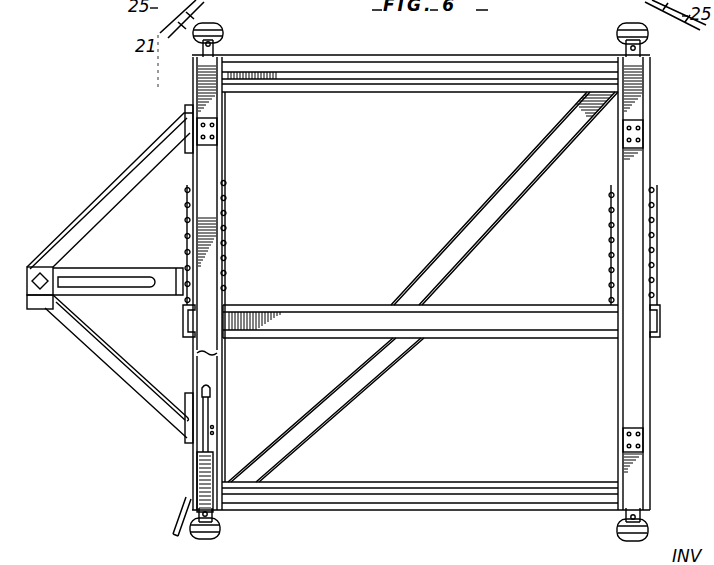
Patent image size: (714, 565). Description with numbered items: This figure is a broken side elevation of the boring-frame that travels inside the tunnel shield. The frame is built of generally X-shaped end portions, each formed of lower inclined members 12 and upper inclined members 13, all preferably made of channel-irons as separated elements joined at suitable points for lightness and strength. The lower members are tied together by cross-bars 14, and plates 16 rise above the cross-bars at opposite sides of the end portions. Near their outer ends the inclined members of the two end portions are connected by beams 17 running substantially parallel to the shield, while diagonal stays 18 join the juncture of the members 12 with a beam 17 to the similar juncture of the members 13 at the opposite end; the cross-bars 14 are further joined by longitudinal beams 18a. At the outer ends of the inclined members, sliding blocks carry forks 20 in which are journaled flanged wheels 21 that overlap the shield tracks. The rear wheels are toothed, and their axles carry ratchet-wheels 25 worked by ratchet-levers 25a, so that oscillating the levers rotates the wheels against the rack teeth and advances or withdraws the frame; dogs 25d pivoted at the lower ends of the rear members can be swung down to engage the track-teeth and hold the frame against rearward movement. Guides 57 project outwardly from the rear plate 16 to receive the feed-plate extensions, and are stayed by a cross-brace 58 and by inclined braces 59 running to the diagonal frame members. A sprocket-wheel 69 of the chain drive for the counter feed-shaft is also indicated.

The lower inclined member 12 is at (205, 373).
The upper inclined member 13 is at (212, 163).
The cross-bar 14 is at (188, 322).
The plate 16 is at (195, 212).
The connecting-beam 17 is at (437, 80).
The diagonal beam or stay 18 is at (438, 275).
The longitudinal beam 18a is at (525, 323).
The fork 20 is at (218, 52).
The wheel 21 is at (625, 35).
The ratchet-wheel 25 is at (218, 520).
The ratchet-lever 25a is at (212, 425).
The jack foot bar 25d is at (186, 518).
The guide 57 is at (105, 270).
The cross-brace 58 is at (42, 304).
The inclined brace 59 is at (112, 365).
The sprocket-wheel 69 is at (118, 178).